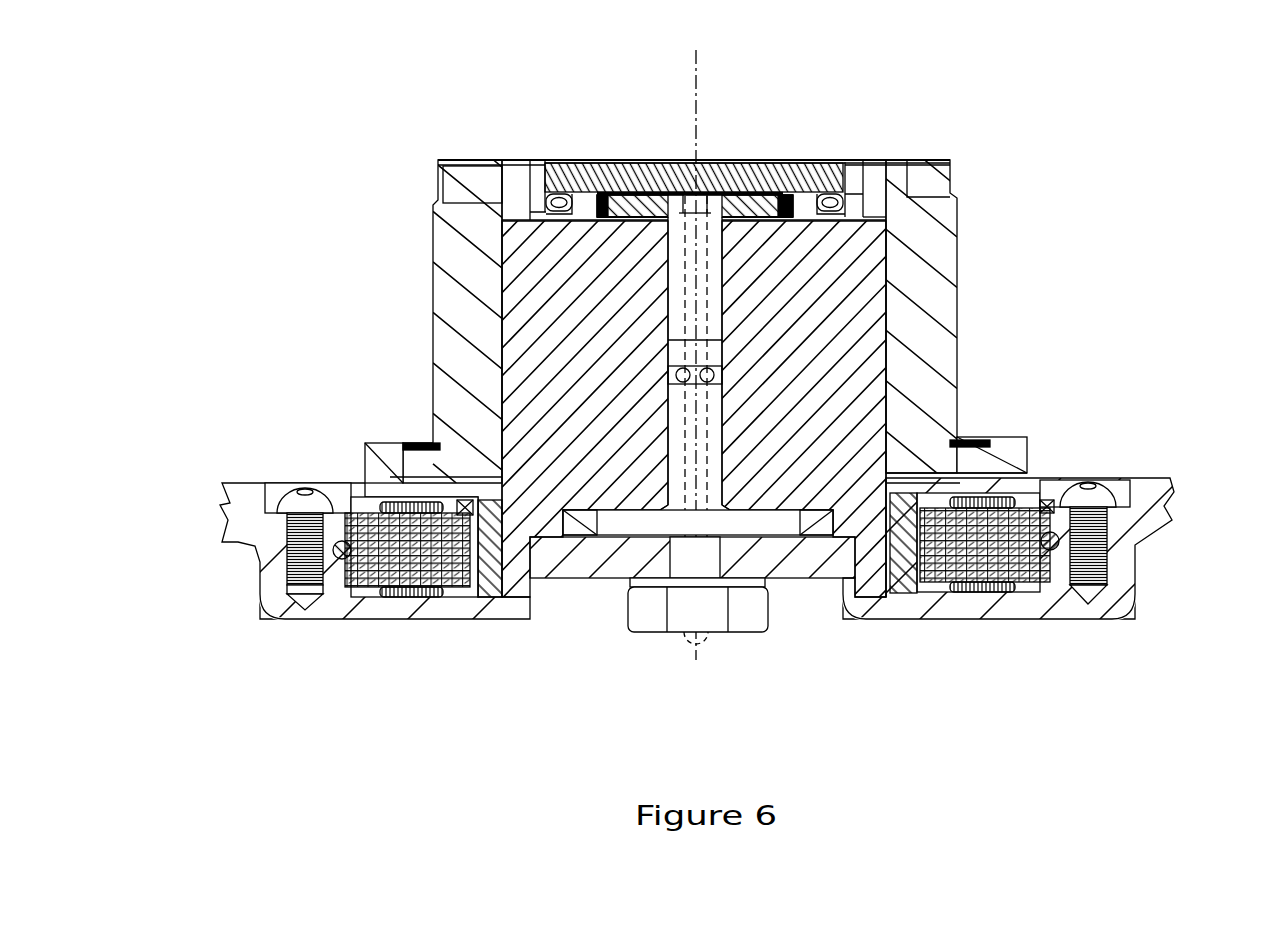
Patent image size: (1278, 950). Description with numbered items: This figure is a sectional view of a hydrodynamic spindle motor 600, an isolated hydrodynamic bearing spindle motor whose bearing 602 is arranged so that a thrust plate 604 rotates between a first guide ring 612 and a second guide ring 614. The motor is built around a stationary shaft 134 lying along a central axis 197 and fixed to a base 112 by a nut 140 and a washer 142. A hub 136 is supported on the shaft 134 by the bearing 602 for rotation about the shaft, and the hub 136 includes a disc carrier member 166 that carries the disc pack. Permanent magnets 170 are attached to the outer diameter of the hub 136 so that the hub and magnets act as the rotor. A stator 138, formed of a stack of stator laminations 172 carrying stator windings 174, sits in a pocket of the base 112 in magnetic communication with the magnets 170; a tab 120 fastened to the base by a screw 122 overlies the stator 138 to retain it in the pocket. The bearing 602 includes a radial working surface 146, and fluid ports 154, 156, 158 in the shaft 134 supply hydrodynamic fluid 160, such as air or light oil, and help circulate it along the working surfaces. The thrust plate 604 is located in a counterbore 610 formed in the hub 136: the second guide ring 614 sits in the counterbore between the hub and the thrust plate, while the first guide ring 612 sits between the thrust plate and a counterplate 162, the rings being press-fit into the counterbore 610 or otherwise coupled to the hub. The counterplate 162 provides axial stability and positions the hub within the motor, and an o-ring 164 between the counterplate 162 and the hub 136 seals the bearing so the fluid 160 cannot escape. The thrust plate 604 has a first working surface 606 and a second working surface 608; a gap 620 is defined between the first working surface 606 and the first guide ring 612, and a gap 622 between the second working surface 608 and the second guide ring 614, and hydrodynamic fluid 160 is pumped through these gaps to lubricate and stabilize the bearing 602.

The hydrodynamic spindle motor 600 is at (1030, 90).
The central axis 197 is at (696, 62).
The hub 136 is at (958, 215).
The disc carrier member 166 is at (960, 317).
The counterbore 610 is at (600, 255).
The radial working surface 146 is at (888, 250).
The thrust plate 604 is at (657, 162).
The first working surface 606 is at (807, 162).
The second working surface 608 is at (843, 160).
The shaft 134 is at (760, 162).
The hydrodynamic fluid 160 is at (632, 165).
The first guide ring 612 is at (588, 176).
The counterplate 162 is at (572, 168).
The o-ring 164 is at (560, 195).
The gap 620 is at (548, 205).
The gap 622 is at (575, 210).
The second guide ring 614 is at (613, 222).
The fluid port 156 is at (668, 395).
The fluid port 158 is at (703, 160).
The fluid port 154 is at (668, 368).
The bearing 602 is at (645, 345).
The washer 142 is at (790, 600).
The base 112 is at (527, 620).
The tab 120 is at (270, 552).
The stator 138 is at (357, 480).
The screw 122 is at (293, 502).
The stator windings 174 is at (410, 592).
The stator laminations 172 is at (466, 598).
The permanent magnets 170 is at (486, 598).
The nut 140 is at (647, 632).